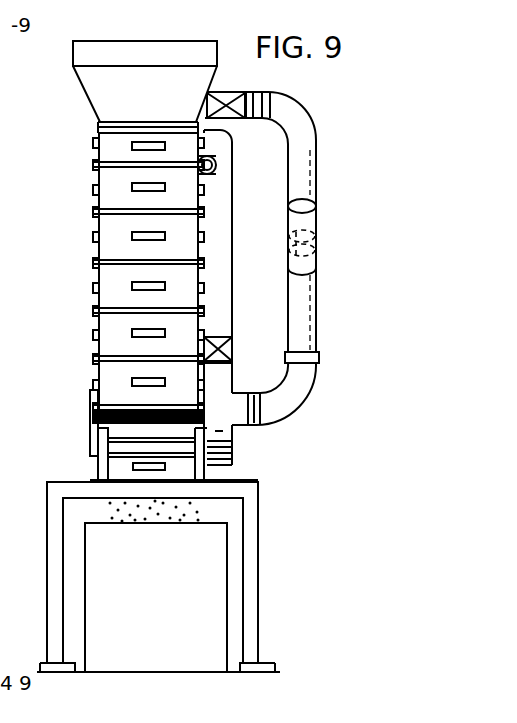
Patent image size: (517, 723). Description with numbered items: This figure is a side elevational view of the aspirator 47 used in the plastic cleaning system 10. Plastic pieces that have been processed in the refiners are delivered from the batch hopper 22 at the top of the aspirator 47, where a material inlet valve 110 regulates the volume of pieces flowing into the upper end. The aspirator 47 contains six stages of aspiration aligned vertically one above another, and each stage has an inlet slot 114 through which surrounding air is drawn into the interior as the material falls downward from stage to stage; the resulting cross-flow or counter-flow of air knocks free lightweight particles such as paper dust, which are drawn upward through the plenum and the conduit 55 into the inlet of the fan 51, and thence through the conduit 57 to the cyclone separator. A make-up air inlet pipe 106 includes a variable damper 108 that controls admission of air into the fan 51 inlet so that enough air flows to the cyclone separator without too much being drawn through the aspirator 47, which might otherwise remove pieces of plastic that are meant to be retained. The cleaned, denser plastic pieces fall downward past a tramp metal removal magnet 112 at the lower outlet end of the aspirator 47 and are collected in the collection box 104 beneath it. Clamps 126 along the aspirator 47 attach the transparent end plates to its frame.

The batch hopper 22 is at (150, 50).
The plastic cleaning system 10 is at (132, 107).
The aspirator 47 is at (93, 172).
The inlet slot 114 is at (114, 170).
The material inlet valve 110 is at (215, 162).
The clamps 126 is at (95, 385).
The conduit 55 is at (318, 173).
The make-up air inlet pipe 106 is at (318, 213).
The damper 108 is at (318, 255).
The conduit 57 is at (225, 255).
The fan 51 is at (222, 385).
The tramp metal removal magnet 112 is at (143, 460).
The collection box 104 is at (172, 633).